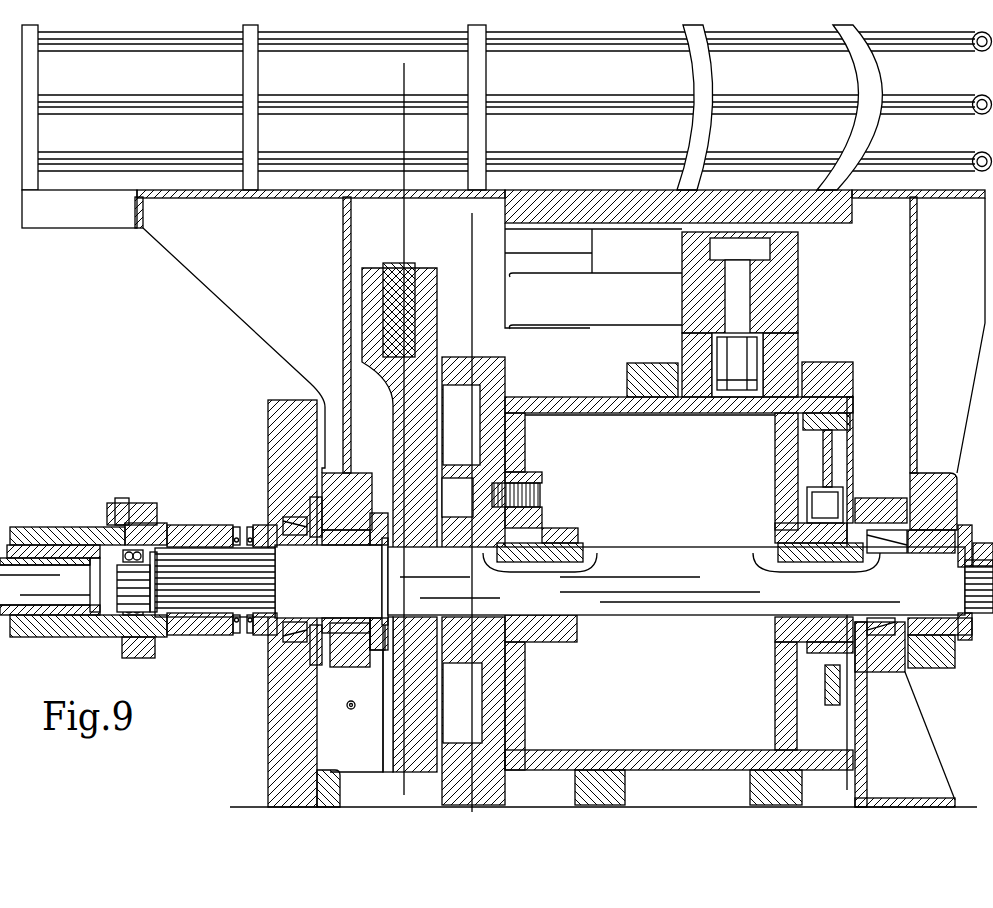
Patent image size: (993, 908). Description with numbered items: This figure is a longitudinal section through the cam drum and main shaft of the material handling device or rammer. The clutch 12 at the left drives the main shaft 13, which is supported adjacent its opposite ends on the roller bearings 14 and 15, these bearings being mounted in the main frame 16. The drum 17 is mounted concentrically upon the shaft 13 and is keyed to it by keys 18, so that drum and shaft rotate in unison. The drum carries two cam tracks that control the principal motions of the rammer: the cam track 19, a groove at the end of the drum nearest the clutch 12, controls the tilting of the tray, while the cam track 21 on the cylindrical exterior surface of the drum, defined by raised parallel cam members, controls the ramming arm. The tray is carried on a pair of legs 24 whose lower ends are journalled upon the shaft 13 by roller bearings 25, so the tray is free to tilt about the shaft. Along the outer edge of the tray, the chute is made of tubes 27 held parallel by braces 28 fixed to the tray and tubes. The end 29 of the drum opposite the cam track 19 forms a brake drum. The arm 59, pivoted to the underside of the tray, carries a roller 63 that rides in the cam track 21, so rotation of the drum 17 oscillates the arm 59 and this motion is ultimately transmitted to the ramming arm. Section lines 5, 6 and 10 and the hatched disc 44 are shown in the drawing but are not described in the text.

The section line 5 is at (428, 75).
The section line 6 is at (444, 228).
The section line 10 is at (835, 390).
The clutch 12 is at (227, 527).
The main shaft 13 is at (660, 540).
The roller bearing 14 is at (283, 645).
The roller bearing 15 is at (870, 625).
The main frame 16 is at (277, 700).
The drum 17 is at (645, 410).
The keys 18 is at (573, 553).
The cam track 19 is at (473, 408).
The cam track 21 is at (803, 360).
The legs 24 is at (343, 273).
The roller bearings 25 is at (347, 628).
The tubes 27 is at (923, 158).
The braces 28 is at (882, 82).
The end of cam drum 29 is at (852, 408).
The flywheel 44 is at (393, 424).
The arm 59 is at (630, 287).
The roller 63 is at (688, 353).